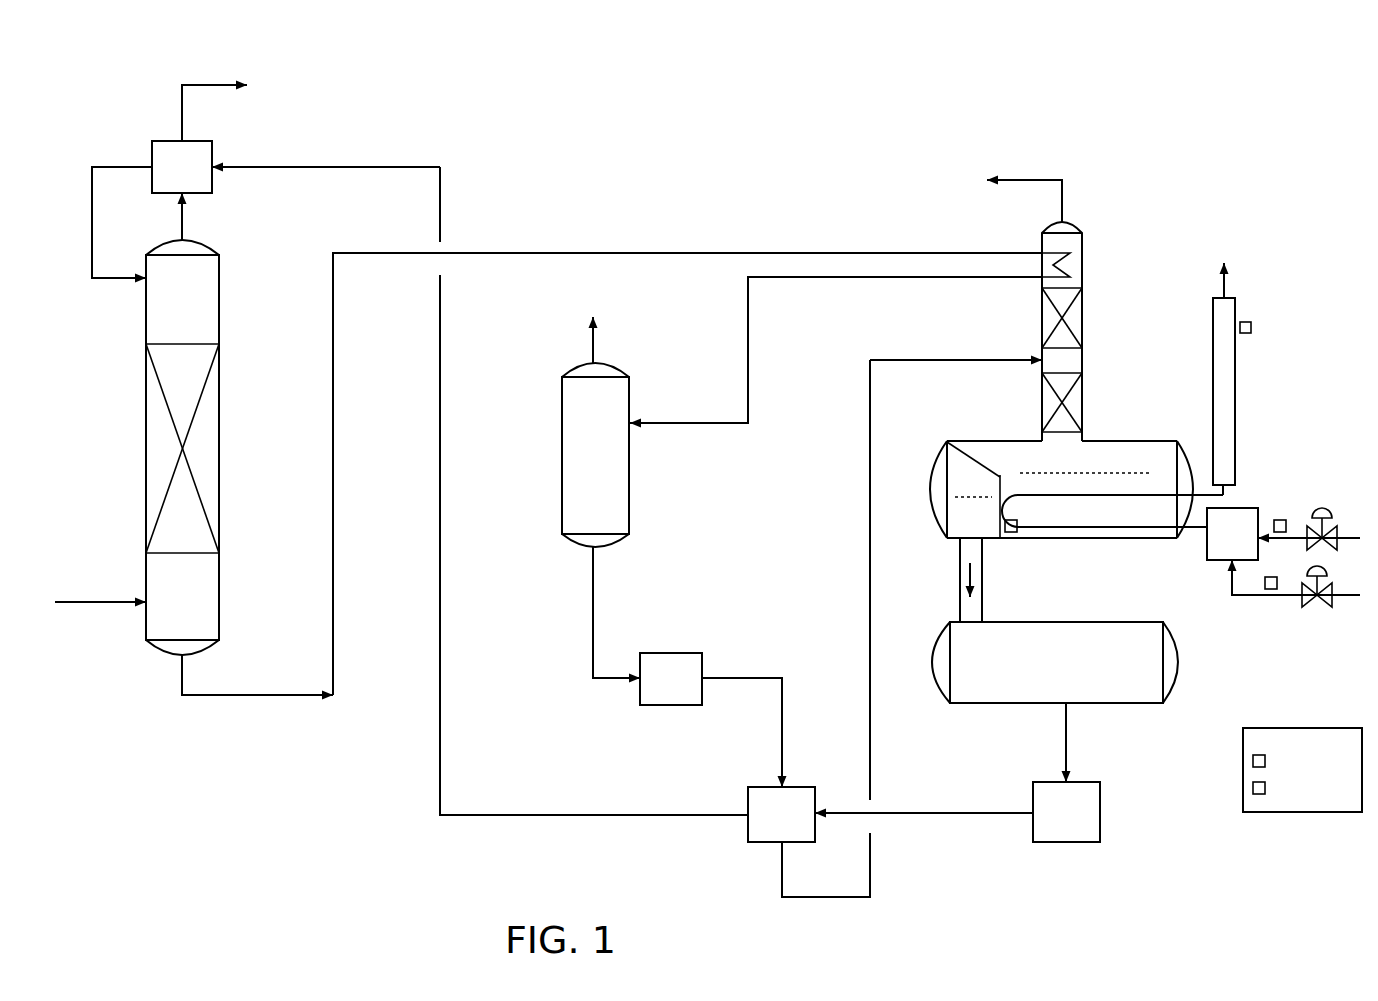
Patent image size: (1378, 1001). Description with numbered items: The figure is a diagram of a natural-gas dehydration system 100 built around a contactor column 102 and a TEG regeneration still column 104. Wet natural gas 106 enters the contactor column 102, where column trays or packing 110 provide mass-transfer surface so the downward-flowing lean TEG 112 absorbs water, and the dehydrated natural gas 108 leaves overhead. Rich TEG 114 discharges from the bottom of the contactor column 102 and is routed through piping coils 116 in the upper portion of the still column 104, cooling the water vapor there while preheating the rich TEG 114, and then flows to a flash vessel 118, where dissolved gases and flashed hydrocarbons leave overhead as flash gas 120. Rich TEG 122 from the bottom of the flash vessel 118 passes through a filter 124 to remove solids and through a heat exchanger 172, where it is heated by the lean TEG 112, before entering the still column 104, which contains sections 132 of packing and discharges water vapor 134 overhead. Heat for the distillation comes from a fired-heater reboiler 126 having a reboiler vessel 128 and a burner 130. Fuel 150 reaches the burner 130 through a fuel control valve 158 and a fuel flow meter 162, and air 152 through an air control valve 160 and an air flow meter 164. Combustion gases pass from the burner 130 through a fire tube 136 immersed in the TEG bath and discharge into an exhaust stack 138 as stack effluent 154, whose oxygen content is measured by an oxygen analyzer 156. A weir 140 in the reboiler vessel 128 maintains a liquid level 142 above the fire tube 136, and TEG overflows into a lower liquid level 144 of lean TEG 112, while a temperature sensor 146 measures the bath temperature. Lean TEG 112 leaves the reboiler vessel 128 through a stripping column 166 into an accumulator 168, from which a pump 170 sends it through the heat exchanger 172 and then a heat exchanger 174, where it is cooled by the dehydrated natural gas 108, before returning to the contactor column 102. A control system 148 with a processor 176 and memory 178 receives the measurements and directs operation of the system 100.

The natural-gas dehydration system 100 is at (585, 905).
The contactor column 102 is at (146, 440).
The TEG regeneration still column 104 is at (1082, 362).
The natural gas 106 is at (102, 602).
The dehydrated natural gas 108 is at (207, 83).
The column trays or packing 110 is at (205, 467).
The lean TEG 112 is at (92, 202).
The rich TEG 114 is at (248, 695).
The piping coils 116 is at (1067, 262).
The flash vessel 118 is at (562, 463).
The flash gas 120 is at (593, 345).
The rich TEG 122 is at (593, 613).
The filter 124 is at (653, 705).
The fired-heater reboiler 126 is at (1127, 550).
The reboiler vessel 128 is at (968, 440).
The burner 130 is at (1215, 560).
The sections of packing 132 is at (1070, 318).
The water vapor 134 is at (1033, 175).
The fire tube 136 is at (1077, 528).
The exhaust stack 138 is at (1235, 382).
The weir 140 is at (947, 442).
The liquid level 142 is at (1075, 472).
The lower liquid level 144 is at (973, 493).
The temperature sensor 146 is at (1045, 555).
The control system 148 is at (1303, 812).
The fuel 150 is at (1358, 535).
The air 152 is at (1353, 600).
The stack effluent 154 is at (1224, 290).
The oxygen analyzer 156 is at (1251, 329).
The fuel control valve 158 is at (1322, 508).
The air control valve 160 is at (1323, 607).
The fuel flow meter 162 is at (1285, 520).
The air flow meter 164 is at (1272, 590).
The stripping column 166 is at (960, 600).
The accumulator 168 is at (938, 700).
The pump 170 is at (1066, 842).
The heat exchanger 172 is at (747, 835).
The heat exchanger 174 is at (163, 138).
The processor 176 is at (1253, 760).
The memory 178 is at (1253, 790).